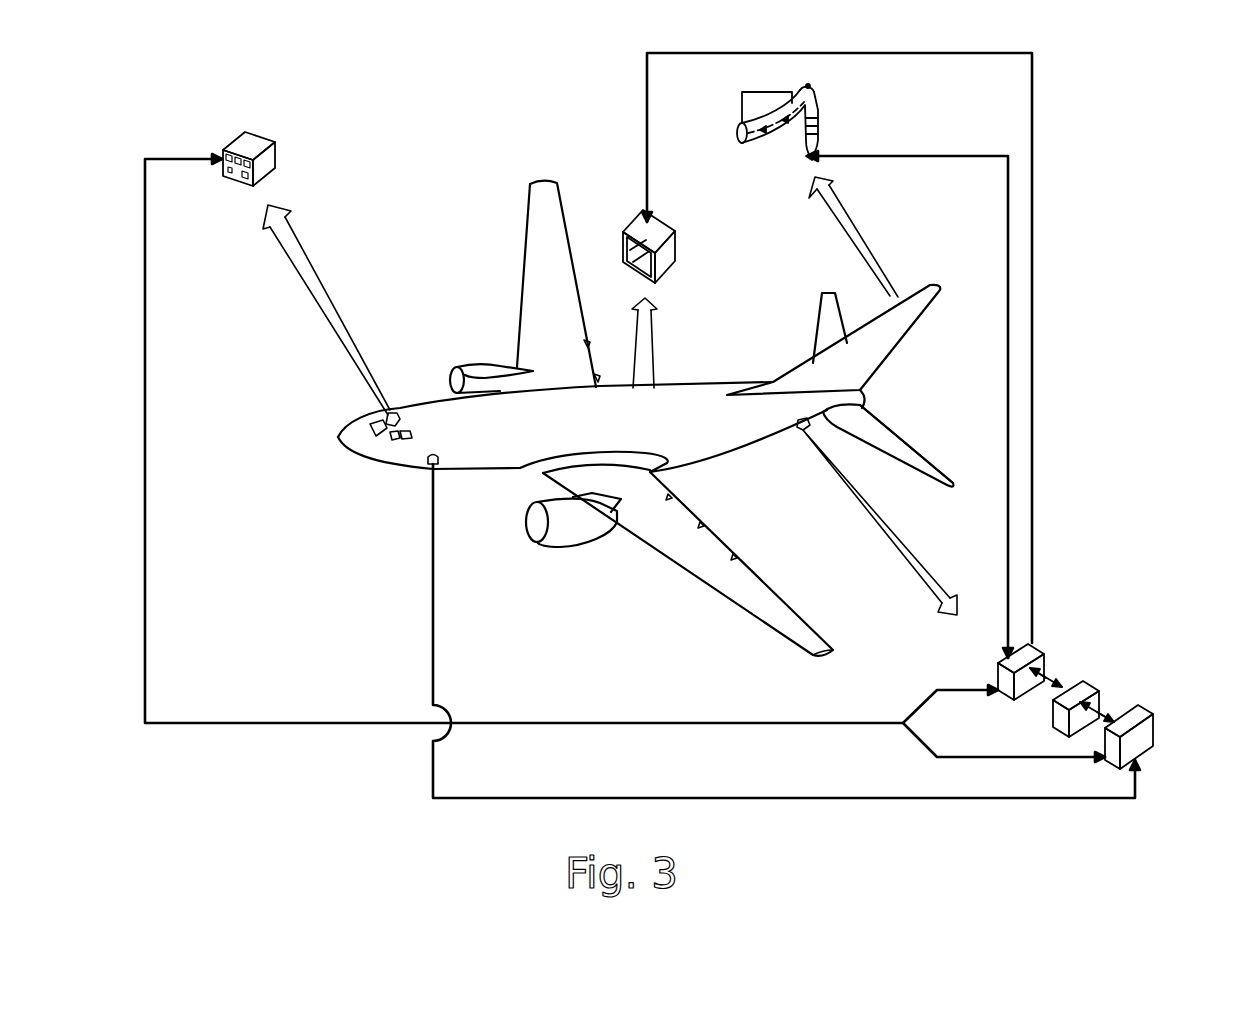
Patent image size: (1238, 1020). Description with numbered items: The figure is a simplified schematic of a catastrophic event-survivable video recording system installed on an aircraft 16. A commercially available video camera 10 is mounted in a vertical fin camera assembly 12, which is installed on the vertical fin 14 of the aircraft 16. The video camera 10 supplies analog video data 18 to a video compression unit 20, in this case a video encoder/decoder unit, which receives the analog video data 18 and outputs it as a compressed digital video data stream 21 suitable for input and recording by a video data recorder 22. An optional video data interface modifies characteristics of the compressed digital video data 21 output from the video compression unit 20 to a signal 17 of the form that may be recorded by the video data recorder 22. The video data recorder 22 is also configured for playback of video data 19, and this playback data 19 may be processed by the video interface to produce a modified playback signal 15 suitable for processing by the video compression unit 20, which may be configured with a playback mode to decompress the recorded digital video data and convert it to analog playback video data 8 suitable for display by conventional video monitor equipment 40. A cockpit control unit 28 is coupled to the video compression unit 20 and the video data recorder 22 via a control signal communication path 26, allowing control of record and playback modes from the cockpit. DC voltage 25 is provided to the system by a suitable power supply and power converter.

The analog playback video data 8 is at (1032, 427).
The video camera 10 is at (742, 105).
The vertical fin camera assembly 12 is at (768, 102).
The vertical fin 14 is at (918, 305).
The modified playback signal 15 is at (1032, 693).
The aircraft 16 is at (668, 387).
The signal 17 is at (1100, 707).
The analog video data 18 is at (1008, 427).
The playback video data 19 is at (1085, 720).
The video compression unit 20 is at (1047, 655).
The compressed digital video data stream 21 is at (1053, 678).
The video data recorder 22 is at (1135, 745).
The DC voltage 25 is at (675, 798).
The control signal communication path 26 is at (145, 420).
The cockpit control unit 28 is at (252, 143).
The video monitor equipment 40 is at (660, 227).